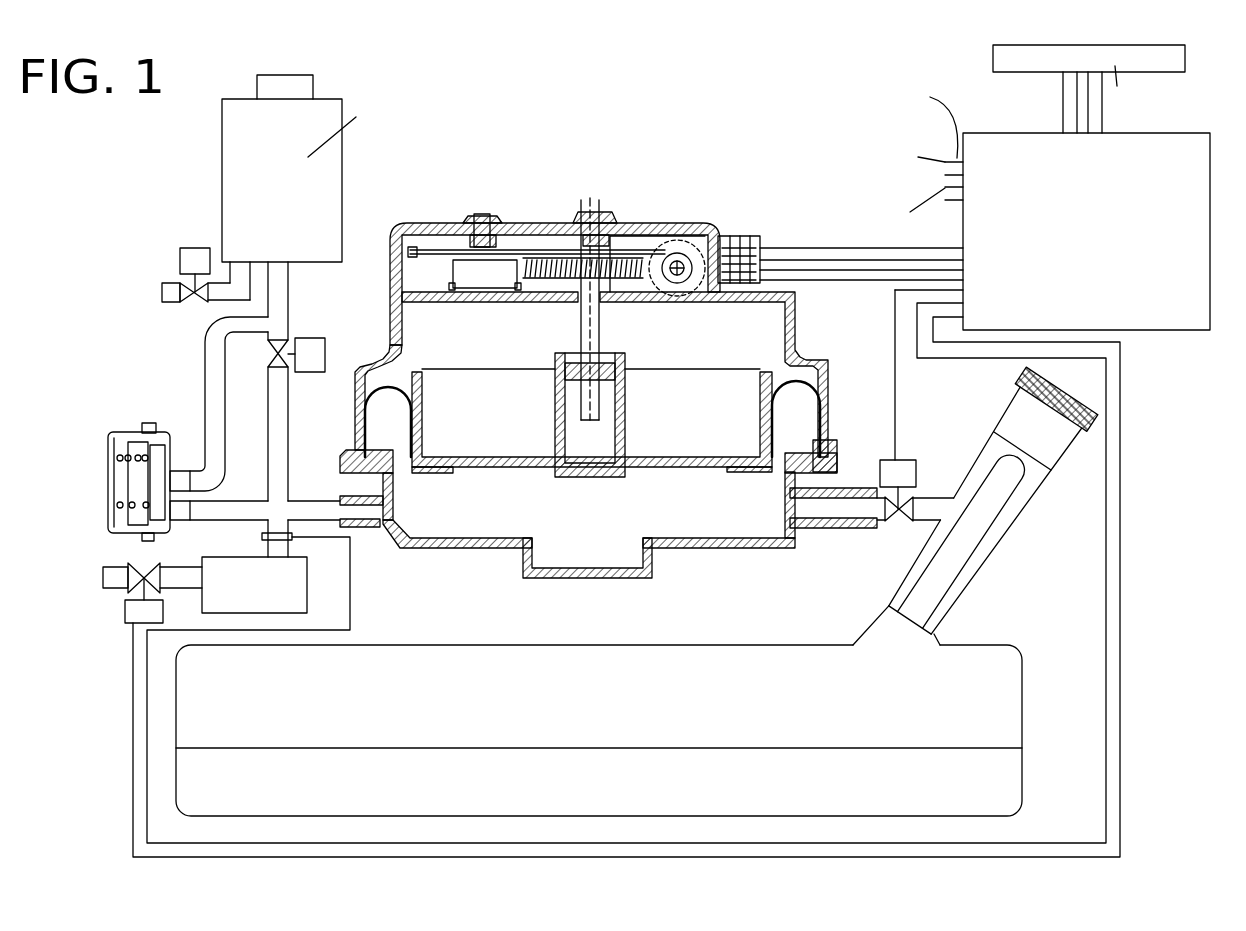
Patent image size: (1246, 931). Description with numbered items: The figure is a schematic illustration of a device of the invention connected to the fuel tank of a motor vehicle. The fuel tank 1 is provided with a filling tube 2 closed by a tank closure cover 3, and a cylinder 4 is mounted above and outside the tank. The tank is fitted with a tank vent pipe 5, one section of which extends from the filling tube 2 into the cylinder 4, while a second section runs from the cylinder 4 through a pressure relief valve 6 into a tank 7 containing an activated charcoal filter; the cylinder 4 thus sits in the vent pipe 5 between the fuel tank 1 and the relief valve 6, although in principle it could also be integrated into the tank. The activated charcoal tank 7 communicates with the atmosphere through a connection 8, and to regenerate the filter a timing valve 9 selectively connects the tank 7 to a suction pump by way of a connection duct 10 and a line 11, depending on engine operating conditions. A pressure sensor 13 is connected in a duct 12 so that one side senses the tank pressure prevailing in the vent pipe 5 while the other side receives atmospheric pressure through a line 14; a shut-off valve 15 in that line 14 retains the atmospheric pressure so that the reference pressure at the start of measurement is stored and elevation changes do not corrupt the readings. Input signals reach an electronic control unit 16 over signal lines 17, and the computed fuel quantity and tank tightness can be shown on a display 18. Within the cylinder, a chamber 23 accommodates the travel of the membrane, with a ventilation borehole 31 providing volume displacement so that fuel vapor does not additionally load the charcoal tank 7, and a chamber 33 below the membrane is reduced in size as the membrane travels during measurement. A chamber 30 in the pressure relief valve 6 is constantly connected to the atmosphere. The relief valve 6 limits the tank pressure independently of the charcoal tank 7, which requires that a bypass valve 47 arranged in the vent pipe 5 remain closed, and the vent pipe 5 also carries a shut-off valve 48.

The fuel tank 1 is at (310, 802).
The filling tube 2 is at (1025, 495).
The tank closure cover 3 is at (1057, 390).
The cylinder 4 is at (720, 542).
The tank vent pipe 5 is at (357, 498).
The pressure relief valve 6 is at (150, 428).
The tank containing an activated charcoal filter 7 is at (248, 138).
The connection 8 is at (298, 90).
The timing valve 9 is at (193, 256).
The connection duct 10 is at (241, 288).
The line 11 is at (173, 290).
The duct 12 is at (263, 541).
The pressure sensor 13 is at (254, 585).
The line 14 is at (116, 574).
The shut-off valve 15 is at (138, 610).
The electronic control unit 16 is at (1160, 313).
The signal lines 17 is at (772, 247).
The display 18 is at (1047, 66).
The chamber 23 is at (705, 337).
The chamber 30 is at (132, 433).
The ventilation borehole 31 is at (393, 326).
The chamber 33 is at (570, 555).
The bypass valve 47 is at (309, 350).
The shut-off valve 48 is at (907, 470).